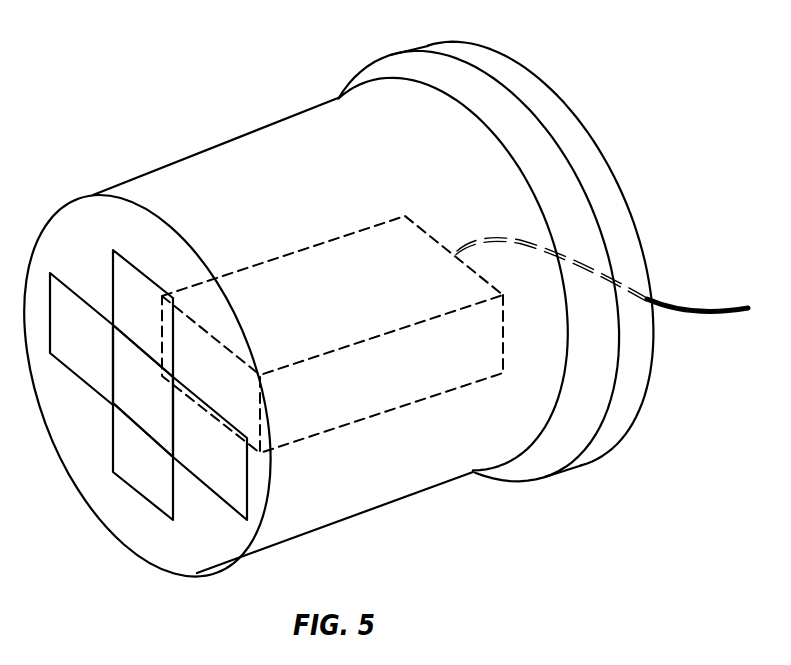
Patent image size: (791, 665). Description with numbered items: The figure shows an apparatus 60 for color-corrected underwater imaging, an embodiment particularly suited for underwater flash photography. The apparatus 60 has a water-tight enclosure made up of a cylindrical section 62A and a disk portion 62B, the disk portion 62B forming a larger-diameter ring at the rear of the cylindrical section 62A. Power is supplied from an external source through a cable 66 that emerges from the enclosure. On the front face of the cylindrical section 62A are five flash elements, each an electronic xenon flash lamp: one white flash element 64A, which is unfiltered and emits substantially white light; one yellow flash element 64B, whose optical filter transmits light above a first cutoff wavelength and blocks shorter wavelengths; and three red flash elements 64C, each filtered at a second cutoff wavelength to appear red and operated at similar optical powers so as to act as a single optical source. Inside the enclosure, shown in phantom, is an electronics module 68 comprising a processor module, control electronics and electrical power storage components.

The apparatus 60 is at (104, 91).
The cylindrical section 62A is at (260, 128).
The disk portion 62B is at (347, 78).
The white flash element 64A is at (118, 400).
The yellow flash element 64B is at (222, 478).
The red flash element 64C is at (67, 303).
The cable 66 is at (680, 302).
The electronics module 68 is at (346, 316).